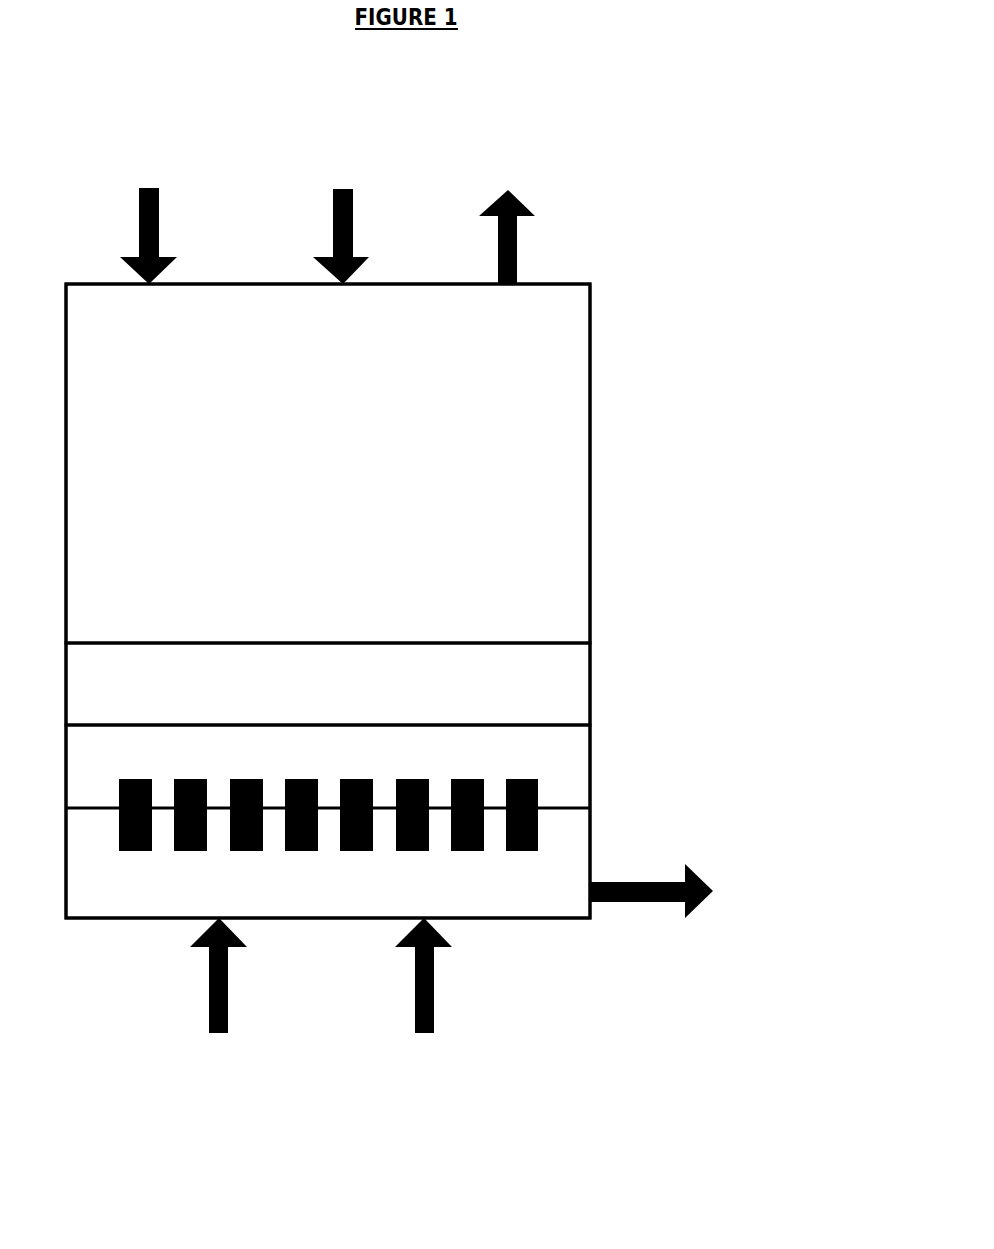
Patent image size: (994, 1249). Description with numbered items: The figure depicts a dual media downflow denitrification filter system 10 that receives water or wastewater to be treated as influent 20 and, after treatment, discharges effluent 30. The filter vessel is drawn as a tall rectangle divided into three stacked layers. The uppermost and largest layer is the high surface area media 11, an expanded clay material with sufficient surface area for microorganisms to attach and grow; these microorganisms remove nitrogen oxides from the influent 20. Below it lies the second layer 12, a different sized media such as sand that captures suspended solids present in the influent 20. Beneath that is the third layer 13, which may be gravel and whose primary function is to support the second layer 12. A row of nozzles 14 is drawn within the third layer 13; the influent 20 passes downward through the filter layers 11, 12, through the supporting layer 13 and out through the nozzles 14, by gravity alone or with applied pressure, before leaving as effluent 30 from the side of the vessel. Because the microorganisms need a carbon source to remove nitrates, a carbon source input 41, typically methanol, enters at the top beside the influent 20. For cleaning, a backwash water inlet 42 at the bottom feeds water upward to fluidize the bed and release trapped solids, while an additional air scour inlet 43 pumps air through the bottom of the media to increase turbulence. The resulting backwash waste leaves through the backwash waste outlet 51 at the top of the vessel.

The downflow denitrification filter system 10 is at (423, 500).
The high surface area media 11 is at (358, 461).
The second layer 12 is at (358, 706).
The third layer 13 is at (517, 759).
The nozzles 14 is at (451, 762).
The influent 20 is at (153, 207).
The effluent 30 is at (717, 889).
The carbon source input 41 is at (343, 194).
The backwash water inlet 42 is at (428, 1019).
The air scour inlet 43 is at (215, 1019).
The backwash waste outlet 51 is at (508, 194).